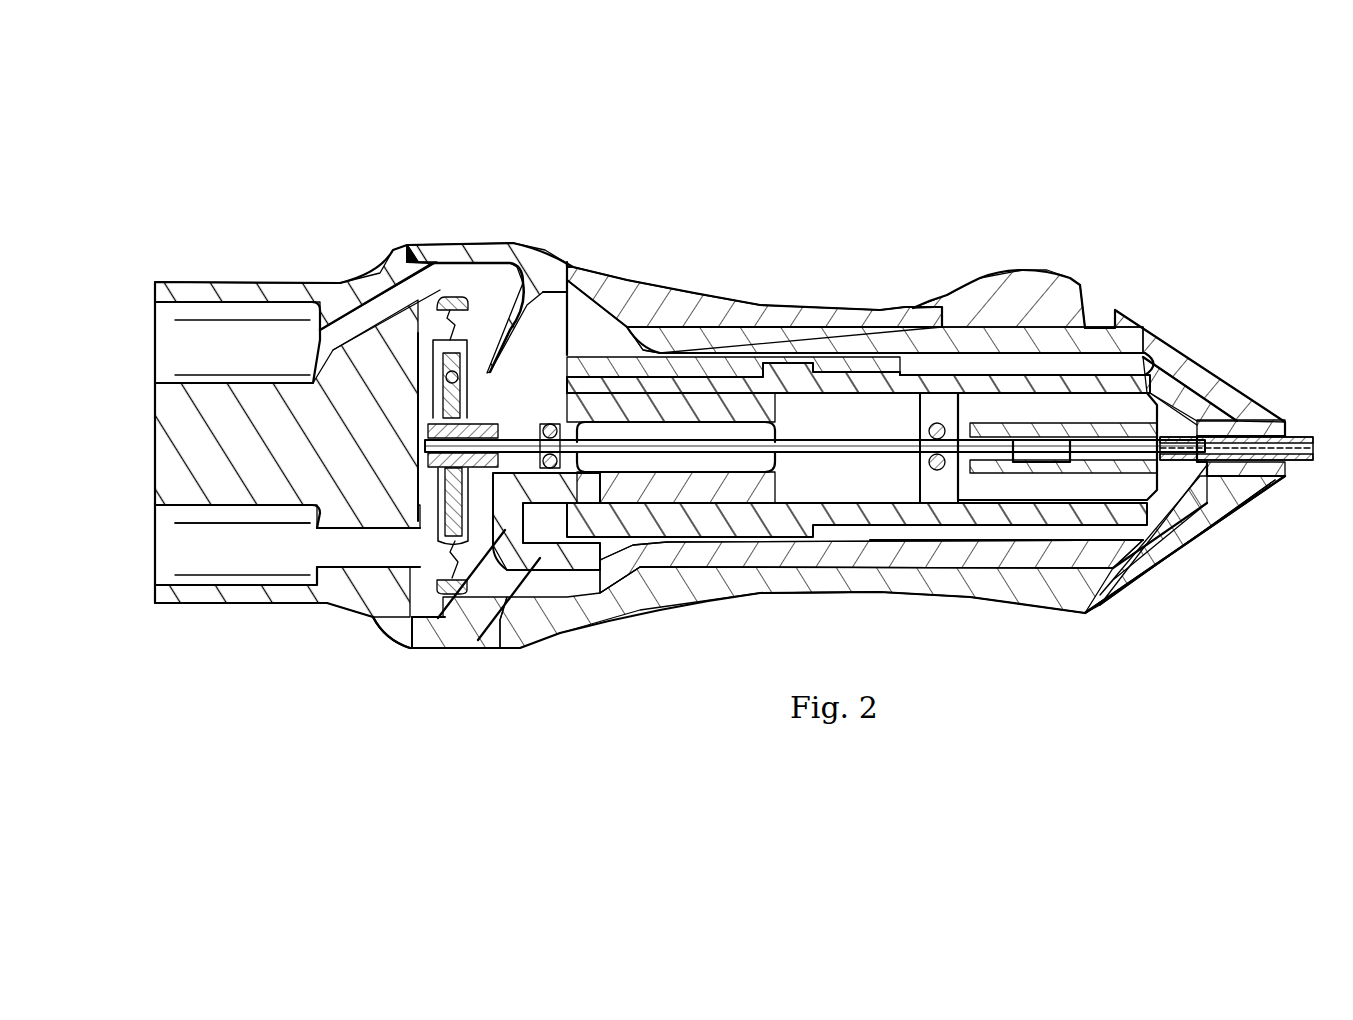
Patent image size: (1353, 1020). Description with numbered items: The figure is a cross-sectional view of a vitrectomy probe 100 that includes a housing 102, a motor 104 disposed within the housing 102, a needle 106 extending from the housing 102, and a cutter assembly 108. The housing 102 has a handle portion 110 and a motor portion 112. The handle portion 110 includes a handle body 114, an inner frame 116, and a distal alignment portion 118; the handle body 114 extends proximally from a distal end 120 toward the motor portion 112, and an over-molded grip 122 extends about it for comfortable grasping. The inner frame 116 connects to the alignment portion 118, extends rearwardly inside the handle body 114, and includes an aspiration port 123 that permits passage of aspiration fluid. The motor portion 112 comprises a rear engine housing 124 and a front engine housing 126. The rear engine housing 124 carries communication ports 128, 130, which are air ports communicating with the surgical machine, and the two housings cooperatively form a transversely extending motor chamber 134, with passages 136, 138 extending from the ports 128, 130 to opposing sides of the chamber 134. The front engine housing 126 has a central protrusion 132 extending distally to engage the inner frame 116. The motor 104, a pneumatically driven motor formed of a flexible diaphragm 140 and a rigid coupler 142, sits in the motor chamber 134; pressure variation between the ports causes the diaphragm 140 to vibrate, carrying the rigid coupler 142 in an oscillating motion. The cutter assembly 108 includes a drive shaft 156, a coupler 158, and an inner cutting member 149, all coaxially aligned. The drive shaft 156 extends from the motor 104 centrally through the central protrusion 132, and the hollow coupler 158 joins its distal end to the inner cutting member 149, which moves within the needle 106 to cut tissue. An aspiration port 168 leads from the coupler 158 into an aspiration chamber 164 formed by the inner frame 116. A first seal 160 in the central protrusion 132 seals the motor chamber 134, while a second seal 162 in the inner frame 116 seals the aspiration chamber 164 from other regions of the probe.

The vitrectomy probe 100 is at (1022, 146).
The housing 102 is at (485, 658).
The motor 104 is at (430, 517).
The needle 106 is at (1300, 432).
The cutter assembly 108 is at (858, 478).
The handle portion 110 is at (690, 612).
The motor portion 112 is at (385, 635).
The handle body 114 is at (1180, 555).
The inner frame 116 is at (1000, 360).
The distal alignment portion 118 is at (1190, 400).
The distal end 120 is at (1293, 478).
The over-molded grip 122 is at (905, 590).
The aspiration port 123 is at (985, 505).
The rear engine housing 124 is at (200, 605).
The front engine housing 126 is at (468, 240).
The communication port 128 is at (162, 340).
The communication port 130 is at (160, 562).
The central protrusion 132 is at (772, 408).
The motor chamber 134 is at (430, 378).
The passage 136 is at (390, 305).
The passage 138 is at (330, 555).
The flexible diaphragm 140 is at (440, 548).
The rigid coupler 142 is at (515, 556).
The inner cutting member 149 is at (1195, 508).
The drive shaft 156 is at (840, 456).
The coupler 158 is at (1130, 390).
The first seal 160 is at (545, 425).
The second seal 162 is at (930, 438).
The aspiration chamber 164 is at (1125, 480).
The aspiration port 168 is at (1050, 435).